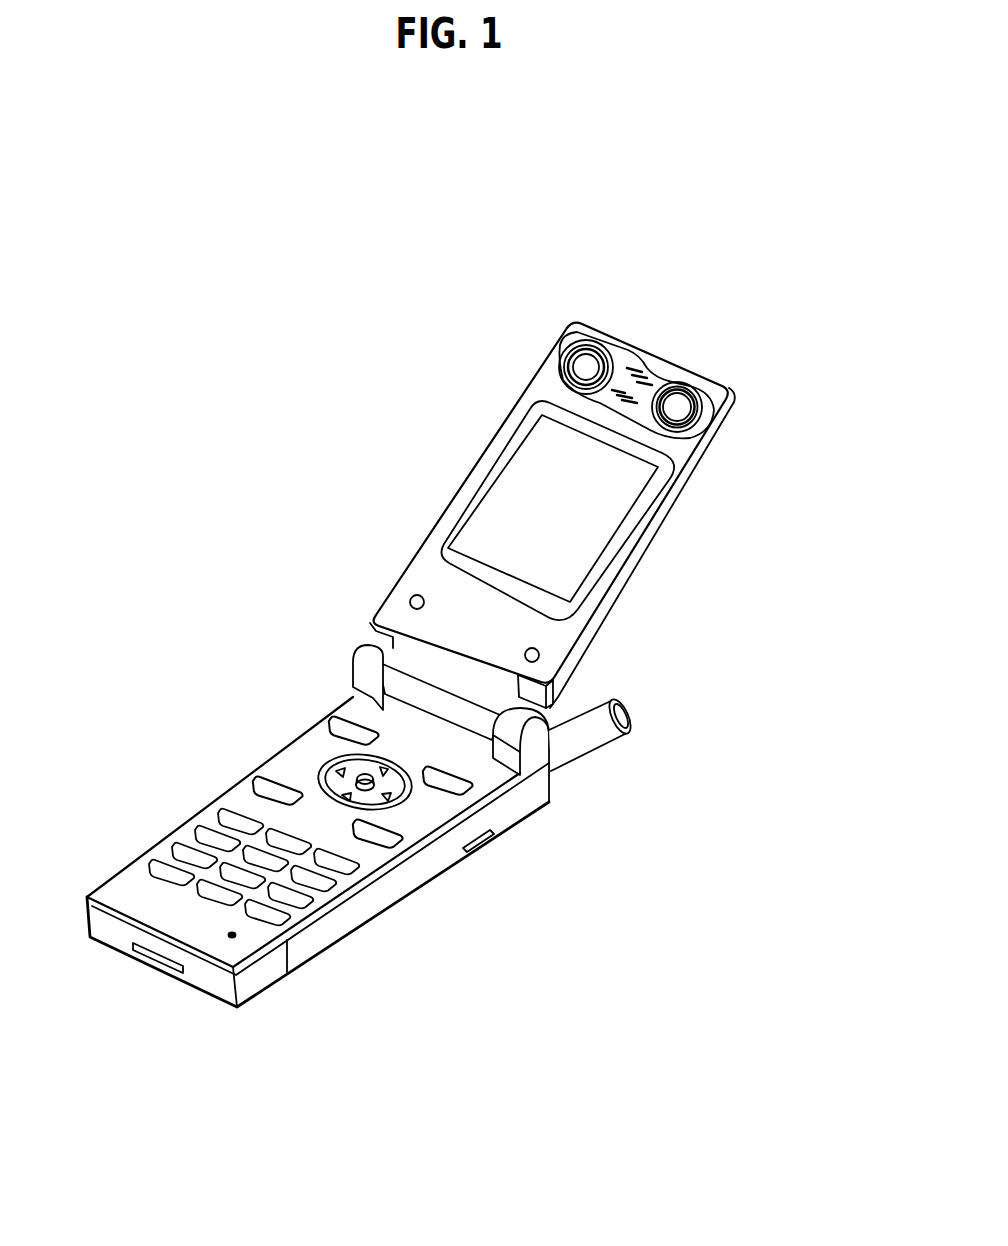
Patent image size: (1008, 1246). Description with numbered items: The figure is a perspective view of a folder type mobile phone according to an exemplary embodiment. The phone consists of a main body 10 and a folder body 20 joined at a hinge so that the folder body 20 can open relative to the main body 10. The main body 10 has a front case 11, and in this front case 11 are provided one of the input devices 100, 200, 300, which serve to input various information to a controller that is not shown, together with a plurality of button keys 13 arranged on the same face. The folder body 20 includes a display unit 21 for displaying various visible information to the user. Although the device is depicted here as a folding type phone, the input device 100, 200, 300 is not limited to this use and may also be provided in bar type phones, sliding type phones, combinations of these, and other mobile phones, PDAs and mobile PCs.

The main body 10 is at (354, 859).
The front case 11 is at (325, 916).
The button keys 13 is at (278, 921).
The folder body 20 is at (622, 515).
The display unit 21 is at (517, 488).
The input device 100 is at (238, 708).
The input device 200 is at (238, 708).
The input device 300 is at (340, 763).